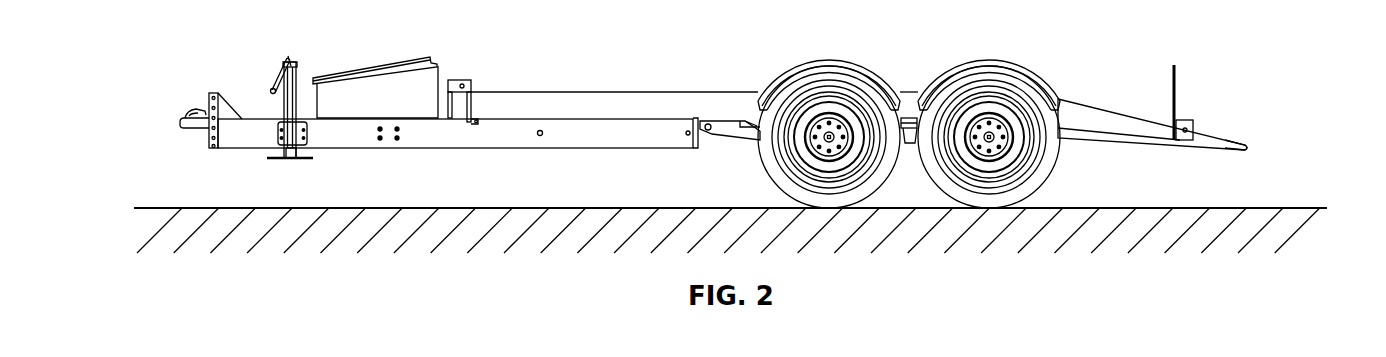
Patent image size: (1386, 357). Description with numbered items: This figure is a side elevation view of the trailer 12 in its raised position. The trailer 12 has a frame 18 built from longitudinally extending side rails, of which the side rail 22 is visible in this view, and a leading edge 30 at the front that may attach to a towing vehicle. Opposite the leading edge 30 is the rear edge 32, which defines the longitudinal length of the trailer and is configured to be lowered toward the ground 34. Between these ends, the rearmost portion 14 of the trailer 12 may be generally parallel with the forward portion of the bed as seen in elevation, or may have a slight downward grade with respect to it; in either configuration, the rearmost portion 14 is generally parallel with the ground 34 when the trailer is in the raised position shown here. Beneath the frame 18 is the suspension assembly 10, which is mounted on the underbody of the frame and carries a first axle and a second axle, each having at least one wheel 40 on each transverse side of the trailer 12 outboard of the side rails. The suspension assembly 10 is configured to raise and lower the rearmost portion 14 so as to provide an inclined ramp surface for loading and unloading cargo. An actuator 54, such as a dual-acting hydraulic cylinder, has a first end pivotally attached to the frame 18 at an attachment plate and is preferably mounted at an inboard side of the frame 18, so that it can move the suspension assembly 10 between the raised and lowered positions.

The suspension assembly 10 is at (743, 79).
The trailer 12 is at (521, 103).
The rearmost portion 14 is at (1105, 113).
The frame 18 is at (543, 110).
The side rail 22 is at (626, 100).
The leading edge 30 is at (183, 117).
The rear edge 32 is at (1247, 147).
The ground 34 is at (1310, 207).
The wheel 40 is at (830, 75).
The actuator 54 is at (737, 128).